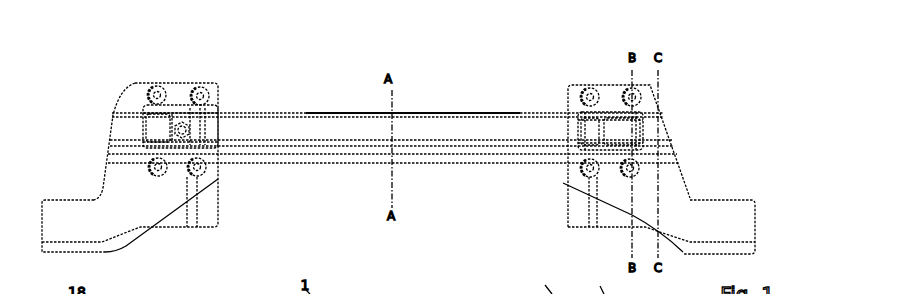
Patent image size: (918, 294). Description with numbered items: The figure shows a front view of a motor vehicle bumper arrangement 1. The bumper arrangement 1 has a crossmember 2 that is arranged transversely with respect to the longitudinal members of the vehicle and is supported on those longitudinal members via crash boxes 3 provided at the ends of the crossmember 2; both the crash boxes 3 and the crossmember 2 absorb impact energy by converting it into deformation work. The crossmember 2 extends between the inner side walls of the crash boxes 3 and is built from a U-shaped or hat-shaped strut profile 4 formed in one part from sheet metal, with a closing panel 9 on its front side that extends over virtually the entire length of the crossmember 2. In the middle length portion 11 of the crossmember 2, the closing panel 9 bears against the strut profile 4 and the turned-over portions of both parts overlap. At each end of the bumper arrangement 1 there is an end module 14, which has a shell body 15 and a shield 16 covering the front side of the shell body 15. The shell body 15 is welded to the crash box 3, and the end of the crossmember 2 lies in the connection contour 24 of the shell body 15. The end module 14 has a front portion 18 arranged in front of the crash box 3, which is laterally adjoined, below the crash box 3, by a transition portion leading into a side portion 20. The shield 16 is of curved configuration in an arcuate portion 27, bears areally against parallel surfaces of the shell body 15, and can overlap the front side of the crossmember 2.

The bumper arrangement 1 is at (540, 73).
The crossmember 2 is at (458, 108).
The crash box 3 is at (422, 283).
The strut profile 4 is at (335, 112).
The closing panel 9 is at (438, 133).
The middle length portion 11 is at (358, 170).
The end module 14 is at (188, 72).
The shell body 15 is at (575, 196).
The shield 16 is at (150, 203).
The front portion 18 is at (120, 130).
The side portion 20 is at (742, 210).
The connection contour 24 is at (541, 282).
The arcuate portion 27 is at (112, 194).